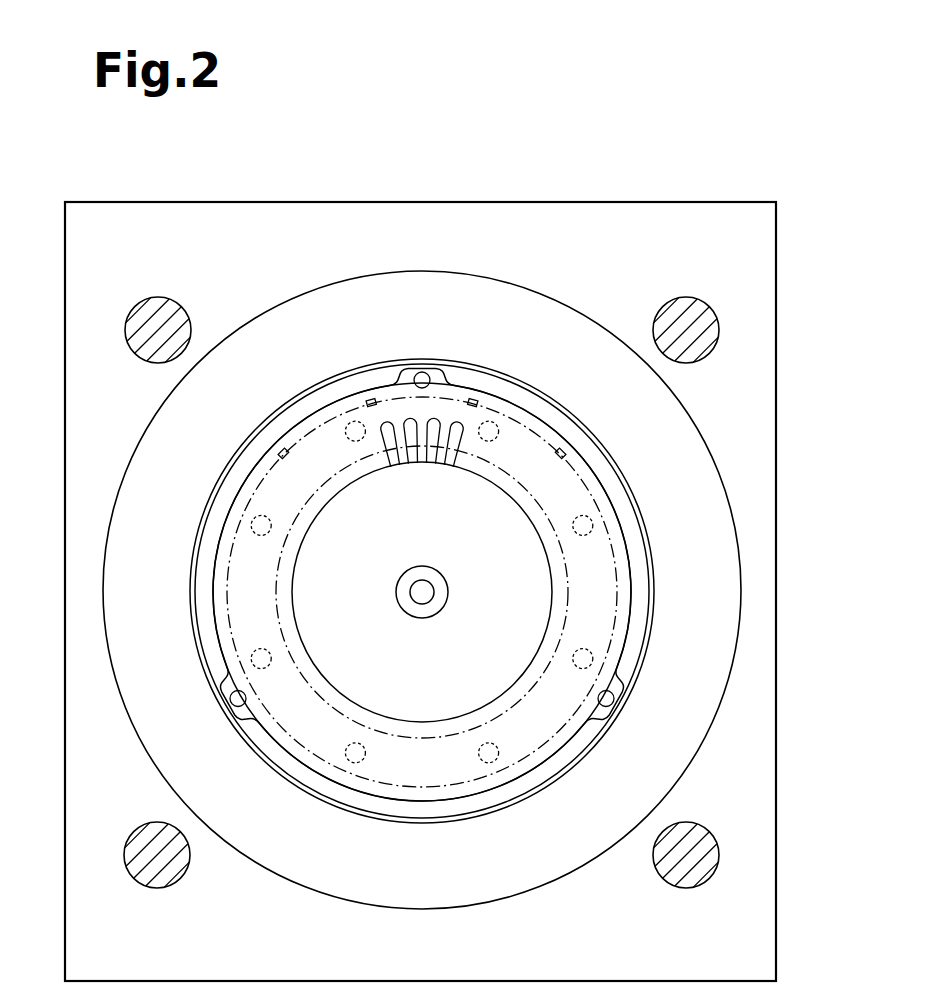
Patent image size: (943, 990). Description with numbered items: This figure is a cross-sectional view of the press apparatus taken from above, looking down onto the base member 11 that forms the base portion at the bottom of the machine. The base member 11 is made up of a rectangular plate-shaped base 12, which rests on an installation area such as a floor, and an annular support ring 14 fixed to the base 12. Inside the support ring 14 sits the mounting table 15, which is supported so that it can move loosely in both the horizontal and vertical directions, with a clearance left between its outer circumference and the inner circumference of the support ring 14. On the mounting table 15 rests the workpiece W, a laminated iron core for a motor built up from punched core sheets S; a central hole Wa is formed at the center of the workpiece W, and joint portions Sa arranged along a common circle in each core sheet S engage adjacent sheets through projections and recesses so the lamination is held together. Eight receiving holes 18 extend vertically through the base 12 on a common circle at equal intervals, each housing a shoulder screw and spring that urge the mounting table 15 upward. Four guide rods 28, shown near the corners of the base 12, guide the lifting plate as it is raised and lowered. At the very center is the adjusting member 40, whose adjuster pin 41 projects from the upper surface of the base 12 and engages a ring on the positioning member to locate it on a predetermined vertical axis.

The base member 11 is at (827, 523).
The base 12 is at (762, 540).
The support ring 14 is at (733, 568).
The mounting table 15 is at (607, 473).
The receiving holes 18 is at (346, 438).
The guide rods 28 is at (150, 297).
The adjusting member 40 is at (405, 572).
The adjuster pin 41 is at (437, 571).
The workpiece W is at (515, 402).
The central hole Wa is at (400, 712).
The core sheets S is at (252, 467).
The joint portions Sa is at (370, 400).